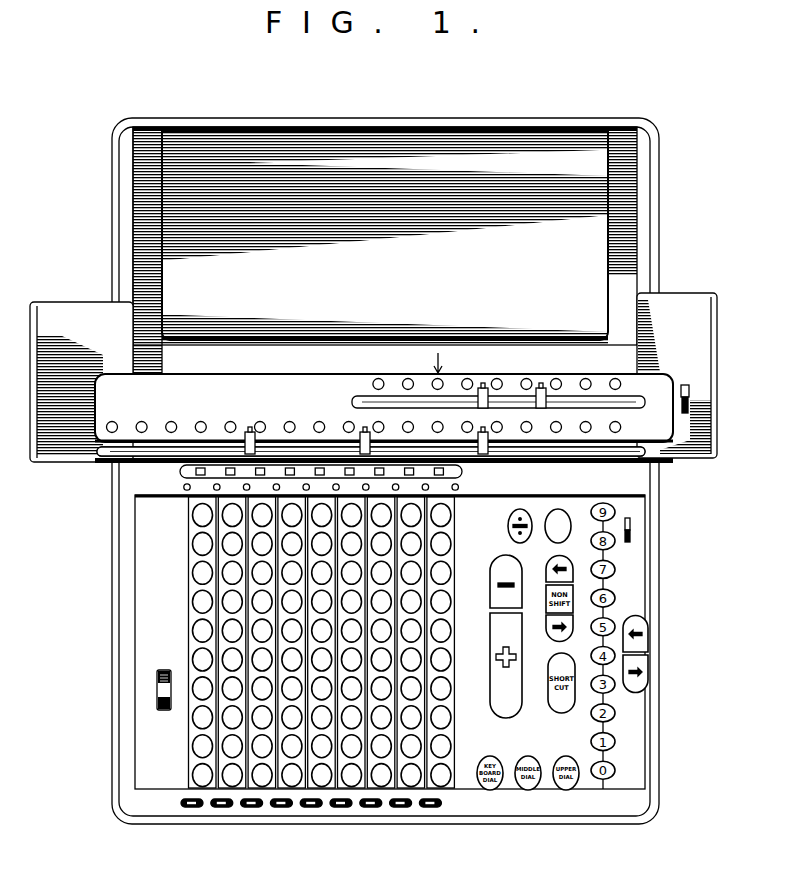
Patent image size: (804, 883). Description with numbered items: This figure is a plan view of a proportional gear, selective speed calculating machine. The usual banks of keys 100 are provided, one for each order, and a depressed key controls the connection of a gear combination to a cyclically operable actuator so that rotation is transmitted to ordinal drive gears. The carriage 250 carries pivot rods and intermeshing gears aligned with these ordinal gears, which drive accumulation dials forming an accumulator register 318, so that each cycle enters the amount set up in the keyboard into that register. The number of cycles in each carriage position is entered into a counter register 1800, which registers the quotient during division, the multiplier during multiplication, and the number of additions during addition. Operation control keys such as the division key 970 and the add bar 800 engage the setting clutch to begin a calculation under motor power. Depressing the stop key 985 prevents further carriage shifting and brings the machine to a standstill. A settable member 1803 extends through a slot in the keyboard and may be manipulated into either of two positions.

The keys 100 is at (197, 720).
The carriage 250 is at (244, 405).
The accumulator register 318 is at (103, 444).
The add bar 800 is at (503, 719).
The division key 970 is at (506, 524).
The stop key 985 is at (571, 527).
The counter register 1800 is at (393, 385).
The settable member 1803 is at (632, 537).